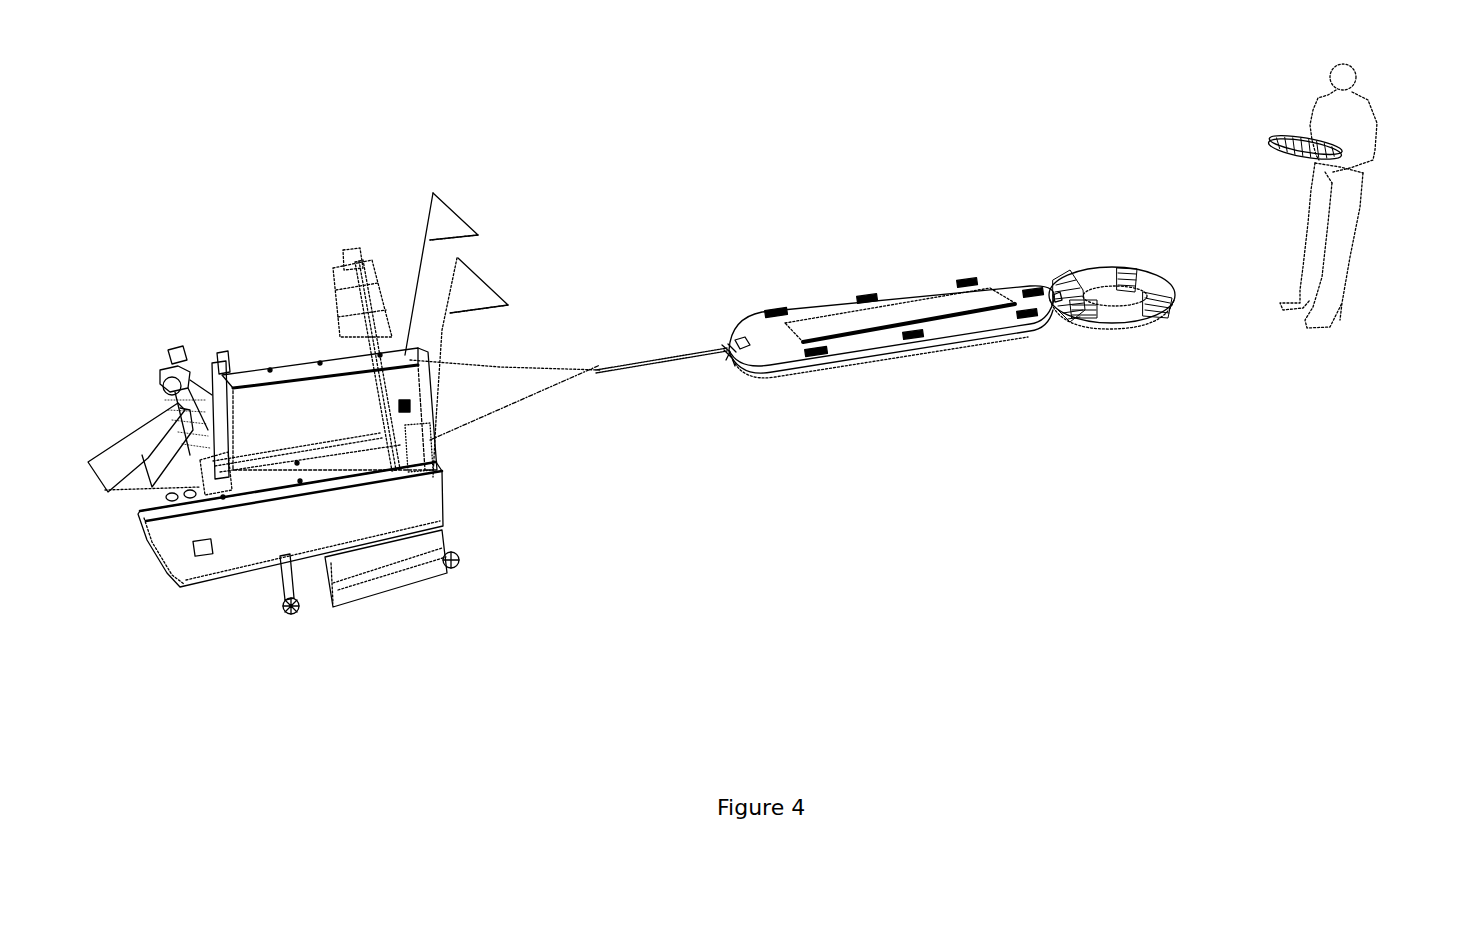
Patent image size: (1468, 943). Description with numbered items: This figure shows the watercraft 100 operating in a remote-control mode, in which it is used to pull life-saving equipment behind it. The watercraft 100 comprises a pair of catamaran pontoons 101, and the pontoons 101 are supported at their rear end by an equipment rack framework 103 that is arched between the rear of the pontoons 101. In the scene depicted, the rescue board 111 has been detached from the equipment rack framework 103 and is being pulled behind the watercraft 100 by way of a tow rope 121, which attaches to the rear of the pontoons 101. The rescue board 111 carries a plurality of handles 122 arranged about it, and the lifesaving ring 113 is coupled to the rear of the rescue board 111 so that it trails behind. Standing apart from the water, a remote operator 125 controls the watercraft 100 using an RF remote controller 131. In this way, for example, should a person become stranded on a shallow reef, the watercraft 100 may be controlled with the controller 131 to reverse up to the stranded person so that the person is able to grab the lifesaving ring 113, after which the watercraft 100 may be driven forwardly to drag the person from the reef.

The watercraft 100 is at (601, 184).
The catamaran pontoons 101 is at (415, 386).
The equipment rack framework 103 is at (375, 397).
The rescue board 111 is at (908, 295).
The lifesaving ring 113 is at (1105, 278).
The tow rope 121 is at (598, 365).
The handles 122 is at (785, 310).
The remote operator 125 is at (1365, 130).
The RF remote controller 131 is at (1290, 163).